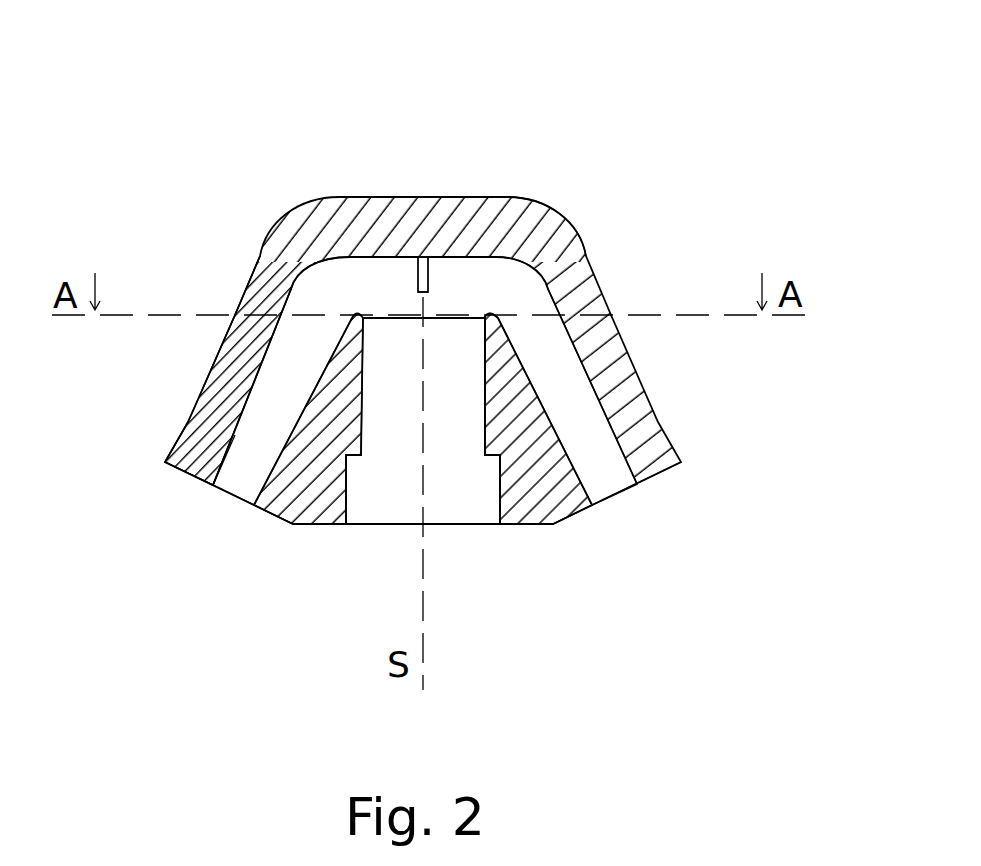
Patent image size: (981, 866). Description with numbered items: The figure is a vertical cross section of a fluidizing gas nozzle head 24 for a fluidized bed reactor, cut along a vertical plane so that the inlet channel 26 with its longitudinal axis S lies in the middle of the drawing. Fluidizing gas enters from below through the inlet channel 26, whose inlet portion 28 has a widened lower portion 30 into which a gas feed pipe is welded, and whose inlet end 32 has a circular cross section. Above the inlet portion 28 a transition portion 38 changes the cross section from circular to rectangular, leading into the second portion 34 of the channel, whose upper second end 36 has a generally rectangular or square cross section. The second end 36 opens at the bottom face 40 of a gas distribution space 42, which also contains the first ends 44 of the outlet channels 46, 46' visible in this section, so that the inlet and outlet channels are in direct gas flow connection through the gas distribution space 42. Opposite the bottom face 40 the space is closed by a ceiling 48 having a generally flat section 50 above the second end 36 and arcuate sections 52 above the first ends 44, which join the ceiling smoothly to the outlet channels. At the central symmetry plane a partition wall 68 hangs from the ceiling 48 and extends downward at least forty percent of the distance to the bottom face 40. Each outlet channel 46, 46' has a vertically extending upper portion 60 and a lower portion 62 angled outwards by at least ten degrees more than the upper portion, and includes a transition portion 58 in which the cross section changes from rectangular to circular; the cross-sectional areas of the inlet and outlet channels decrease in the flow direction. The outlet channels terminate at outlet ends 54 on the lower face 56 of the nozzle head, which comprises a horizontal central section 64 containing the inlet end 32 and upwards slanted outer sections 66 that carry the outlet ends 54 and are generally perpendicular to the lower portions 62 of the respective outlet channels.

The fluidizing gas nozzle head 24 is at (210, 120).
The inlet channel 26 is at (398, 420).
The inlet portion 28 is at (482, 438).
The widened lower portion 30 is at (502, 485).
The inlet end 32 is at (448, 525).
The second portion 34 is at (484, 340).
The second end 36 is at (460, 305).
The transition portion 38 is at (480, 401).
The bottom face 40 is at (380, 310).
The gas distribution space 42 is at (383, 273).
The first ends 44 is at (320, 310).
The outlet channel 46 is at (169, 370).
The outlet channel 46' is at (653, 386).
The ceiling 48 is at (468, 255).
The flat section 50 is at (503, 198).
The arcuate sections 52 is at (533, 270).
The outlet end 54 is at (207, 487).
The lower face 56 is at (300, 525).
The transition portion 58 is at (272, 327).
The upper portion 60 is at (268, 369).
The lower portion 62 is at (212, 440).
The horizontal central section 64 is at (332, 527).
The upwards slanted outer sections 66 is at (262, 513).
The partition wall 68 is at (418, 278).